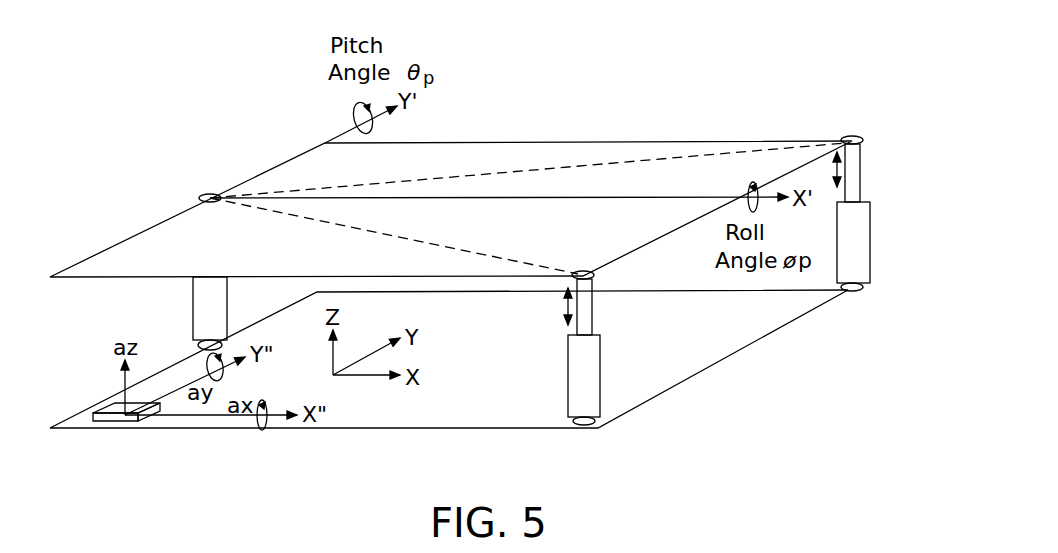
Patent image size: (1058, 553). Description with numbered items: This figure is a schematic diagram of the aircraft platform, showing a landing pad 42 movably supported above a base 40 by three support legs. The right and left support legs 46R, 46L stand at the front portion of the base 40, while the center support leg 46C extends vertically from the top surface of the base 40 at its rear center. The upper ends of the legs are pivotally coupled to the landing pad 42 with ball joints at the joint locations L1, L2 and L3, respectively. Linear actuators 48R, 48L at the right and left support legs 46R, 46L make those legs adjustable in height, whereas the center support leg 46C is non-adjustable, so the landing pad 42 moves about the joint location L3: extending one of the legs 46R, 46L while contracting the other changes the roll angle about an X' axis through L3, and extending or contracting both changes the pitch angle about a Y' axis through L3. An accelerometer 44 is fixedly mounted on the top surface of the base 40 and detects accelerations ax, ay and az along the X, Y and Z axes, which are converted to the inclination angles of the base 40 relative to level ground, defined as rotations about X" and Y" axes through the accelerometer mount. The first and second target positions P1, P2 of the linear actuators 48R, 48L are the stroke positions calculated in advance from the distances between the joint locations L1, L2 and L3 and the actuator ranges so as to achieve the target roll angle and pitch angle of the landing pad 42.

The base 40 is at (375, 403).
The landing pad 42 is at (115, 262).
The accelerometer 44 is at (110, 405).
The center support leg 46C is at (210, 310).
The right support leg 46R is at (580, 389).
The left support leg 46L is at (855, 253).
The linear actuator 48R is at (612, 375).
The linear actuator 48L is at (897, 227).
The joint location L1 is at (588, 272).
The joint location L2 is at (862, 138).
The joint location L3 is at (201, 195).
The first target position P1 is at (552, 306).
The second target position P2 is at (834, 176).